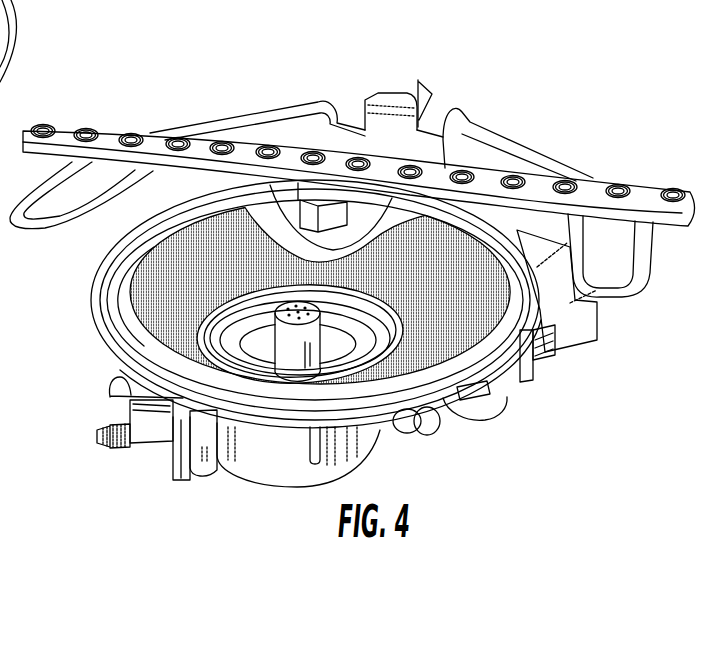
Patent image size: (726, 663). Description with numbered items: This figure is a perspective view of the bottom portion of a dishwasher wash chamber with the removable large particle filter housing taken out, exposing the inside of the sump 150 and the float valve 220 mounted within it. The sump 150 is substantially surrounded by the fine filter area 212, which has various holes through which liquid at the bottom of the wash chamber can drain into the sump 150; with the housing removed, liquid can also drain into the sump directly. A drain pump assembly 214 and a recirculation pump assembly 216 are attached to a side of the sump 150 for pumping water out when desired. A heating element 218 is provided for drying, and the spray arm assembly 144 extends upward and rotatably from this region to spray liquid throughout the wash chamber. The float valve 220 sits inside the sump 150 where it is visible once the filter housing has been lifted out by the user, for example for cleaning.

The spray arm assembly 144 is at (198, 132).
The sump 150 is at (263, 470).
The fine filter area 212 is at (160, 300).
The drain pump assembly 214 is at (110, 395).
The recirculation pump assembly 216 is at (495, 410).
The heating element 218 is at (518, 137).
The float valve 220 is at (313, 294).